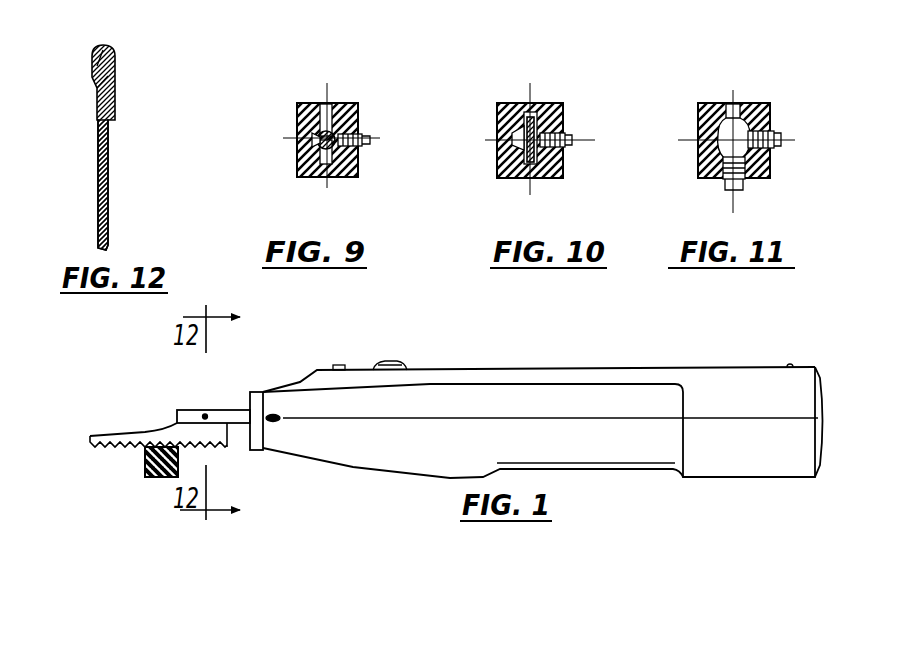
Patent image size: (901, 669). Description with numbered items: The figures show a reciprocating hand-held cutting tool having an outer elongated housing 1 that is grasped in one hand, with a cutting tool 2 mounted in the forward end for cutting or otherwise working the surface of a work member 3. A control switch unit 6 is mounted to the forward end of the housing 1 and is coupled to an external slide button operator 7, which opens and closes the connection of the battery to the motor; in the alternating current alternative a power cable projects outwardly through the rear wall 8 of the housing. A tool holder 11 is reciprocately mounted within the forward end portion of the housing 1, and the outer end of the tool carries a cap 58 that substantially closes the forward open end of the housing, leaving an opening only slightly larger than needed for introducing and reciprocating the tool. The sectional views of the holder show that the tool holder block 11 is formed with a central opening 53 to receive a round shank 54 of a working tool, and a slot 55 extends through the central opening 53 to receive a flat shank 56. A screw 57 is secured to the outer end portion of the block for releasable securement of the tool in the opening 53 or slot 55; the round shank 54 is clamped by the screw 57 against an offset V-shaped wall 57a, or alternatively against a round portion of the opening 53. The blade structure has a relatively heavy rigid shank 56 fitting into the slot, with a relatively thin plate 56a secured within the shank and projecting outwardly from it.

In FIG. 1, the housing 1 is at (630, 366).
In FIG. 1, the cutting tool 2 is at (216, 443).
In FIG. 1, the work member 3 is at (146, 464).
In FIG. 1, the control switch unit 6 is at (355, 362).
In FIG. 1, the slide button operator 7 is at (390, 362).
In FIG. 1, the rear wall 8 is at (823, 405).
In FIG. 9, the tool holder 11 is at (297, 125).
In FIG. 10, the tool holder 11 is at (543, 178).
In FIG. 11, the tool holder 11 is at (770, 170).
In FIG. 9, the central opening 53 is at (315, 178).
In FIG. 10, the central opening 53 is at (517, 178).
In FIG. 11, the central opening 53 is at (716, 148).
In FIG. 9, the round shank 54 is at (337, 105).
In FIG. 9, the slot 55 is at (323, 104).
In FIG. 11, the slot 55 is at (742, 104).
In FIG. 12, the flat shank 56 is at (92, 108).
In FIG. 10, the flat shank 56 is at (536, 105).
In FIG. 1, the flat shank 56 is at (240, 408).
In FIG. 12, the thin plate 56a is at (98, 146).
In FIG. 1, the thin plate 56a is at (123, 435).
In FIG. 9, the screw 57 is at (366, 138).
In FIG. 10, the screw 57 is at (568, 138).
In FIG. 11, the screw 57 is at (781, 140).
In FIG. 1, the screw 57 is at (276, 424).
In FIG. 9, the V-shaped wall 57a is at (297, 153).
In FIG. 11, the cap 58 is at (745, 186).
In FIG. 1, the cap 58 is at (253, 392).